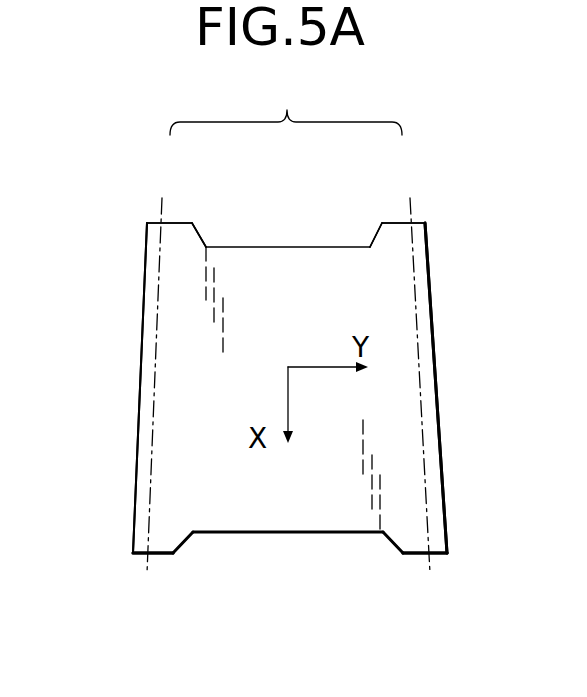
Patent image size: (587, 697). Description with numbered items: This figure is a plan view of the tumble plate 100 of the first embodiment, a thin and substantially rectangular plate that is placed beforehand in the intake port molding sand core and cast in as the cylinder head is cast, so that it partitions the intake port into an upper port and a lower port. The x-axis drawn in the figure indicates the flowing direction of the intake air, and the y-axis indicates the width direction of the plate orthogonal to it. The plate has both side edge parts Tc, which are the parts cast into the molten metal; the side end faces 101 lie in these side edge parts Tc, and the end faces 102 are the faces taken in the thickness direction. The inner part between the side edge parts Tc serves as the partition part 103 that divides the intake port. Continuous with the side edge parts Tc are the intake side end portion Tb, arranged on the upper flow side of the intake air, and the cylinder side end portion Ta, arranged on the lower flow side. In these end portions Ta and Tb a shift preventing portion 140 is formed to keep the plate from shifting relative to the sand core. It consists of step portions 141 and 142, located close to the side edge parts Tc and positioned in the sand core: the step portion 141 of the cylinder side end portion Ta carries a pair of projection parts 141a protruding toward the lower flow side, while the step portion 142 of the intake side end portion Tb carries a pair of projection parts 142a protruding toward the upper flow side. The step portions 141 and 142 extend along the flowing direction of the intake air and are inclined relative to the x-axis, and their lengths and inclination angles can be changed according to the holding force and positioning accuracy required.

The tumble plate 100 is at (122, 206).
The side end faces 101 is at (143, 398).
The end faces in a thickness direction 102 is at (140, 527).
The partition part 103 is at (286, 151).
The shift preventing portion 140 is at (270, 194).
The step portion 141 is at (188, 541).
The projection parts 141a is at (167, 555).
The step portion 142 is at (203, 233).
The projection parts 142a is at (178, 232).
The cylinder side end portion Ta is at (289, 531).
The intake side end portion Tb is at (290, 248).
The both side edge parts Tc is at (145, 291).